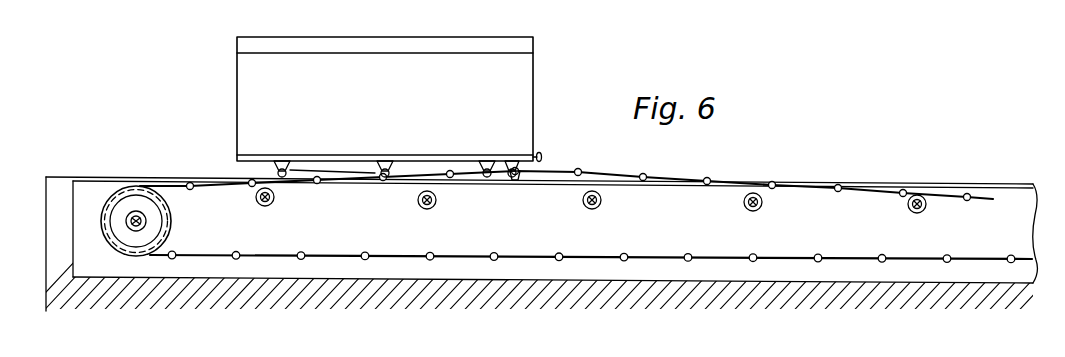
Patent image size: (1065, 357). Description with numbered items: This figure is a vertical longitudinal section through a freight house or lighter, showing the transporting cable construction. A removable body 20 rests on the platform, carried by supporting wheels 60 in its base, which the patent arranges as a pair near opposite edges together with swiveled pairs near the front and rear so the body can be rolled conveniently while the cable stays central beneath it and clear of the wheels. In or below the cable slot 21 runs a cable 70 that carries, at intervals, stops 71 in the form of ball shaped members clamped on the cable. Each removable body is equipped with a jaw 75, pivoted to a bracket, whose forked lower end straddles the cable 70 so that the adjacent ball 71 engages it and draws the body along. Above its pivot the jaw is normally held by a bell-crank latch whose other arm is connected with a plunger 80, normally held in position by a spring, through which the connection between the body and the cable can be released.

The body 20 is at (385, 99).
The cable slot 21 is at (741, 230).
The supporting wheels 60 is at (363, 174).
The cable 70 is at (616, 169).
The stops 71 is at (648, 176).
The jaw 75 is at (516, 181).
The plunger 80 is at (541, 156).